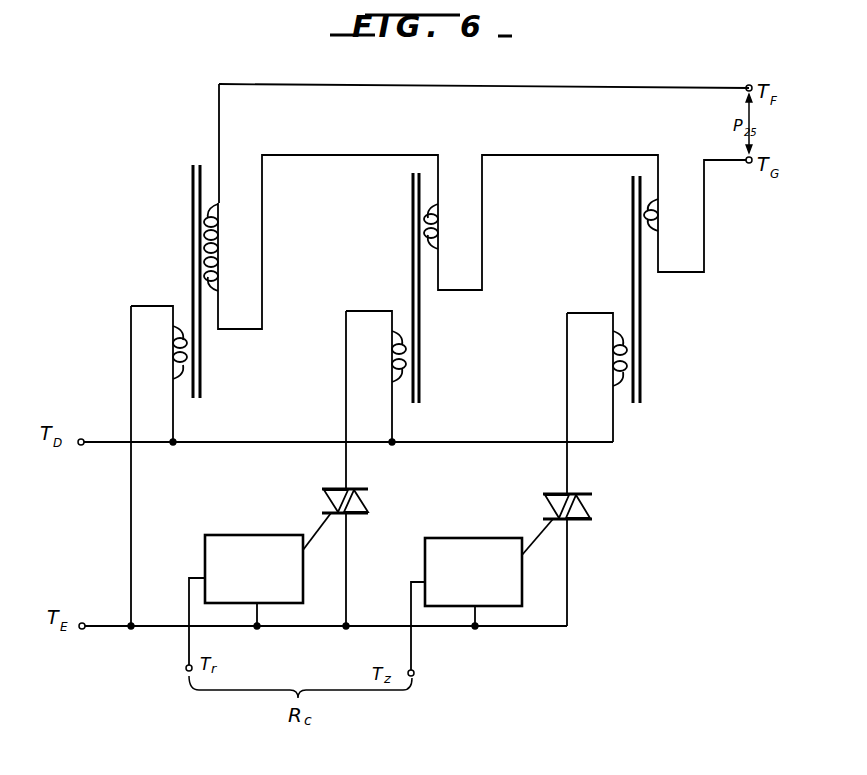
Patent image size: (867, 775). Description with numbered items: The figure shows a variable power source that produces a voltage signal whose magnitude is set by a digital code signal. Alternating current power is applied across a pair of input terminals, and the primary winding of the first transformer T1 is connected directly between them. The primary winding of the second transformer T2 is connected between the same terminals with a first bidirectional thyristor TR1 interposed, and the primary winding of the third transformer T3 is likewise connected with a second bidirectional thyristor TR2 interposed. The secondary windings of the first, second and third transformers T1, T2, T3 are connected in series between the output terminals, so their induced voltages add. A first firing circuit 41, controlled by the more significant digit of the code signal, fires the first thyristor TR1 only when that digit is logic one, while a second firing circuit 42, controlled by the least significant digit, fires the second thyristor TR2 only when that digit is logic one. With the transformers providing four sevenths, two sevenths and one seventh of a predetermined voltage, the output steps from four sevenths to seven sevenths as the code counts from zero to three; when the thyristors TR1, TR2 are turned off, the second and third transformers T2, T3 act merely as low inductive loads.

The first firing circuit 41 is at (264, 535).
The second firing circuit 42 is at (484, 538).
The first transformer T1 is at (195, 269).
The second transformer T2 is at (415, 263).
The third transformer T3 is at (639, 267).
The first bidirectional thyristor TR1 is at (355, 557).
The second bidirectional thyristor TR2 is at (579, 560).